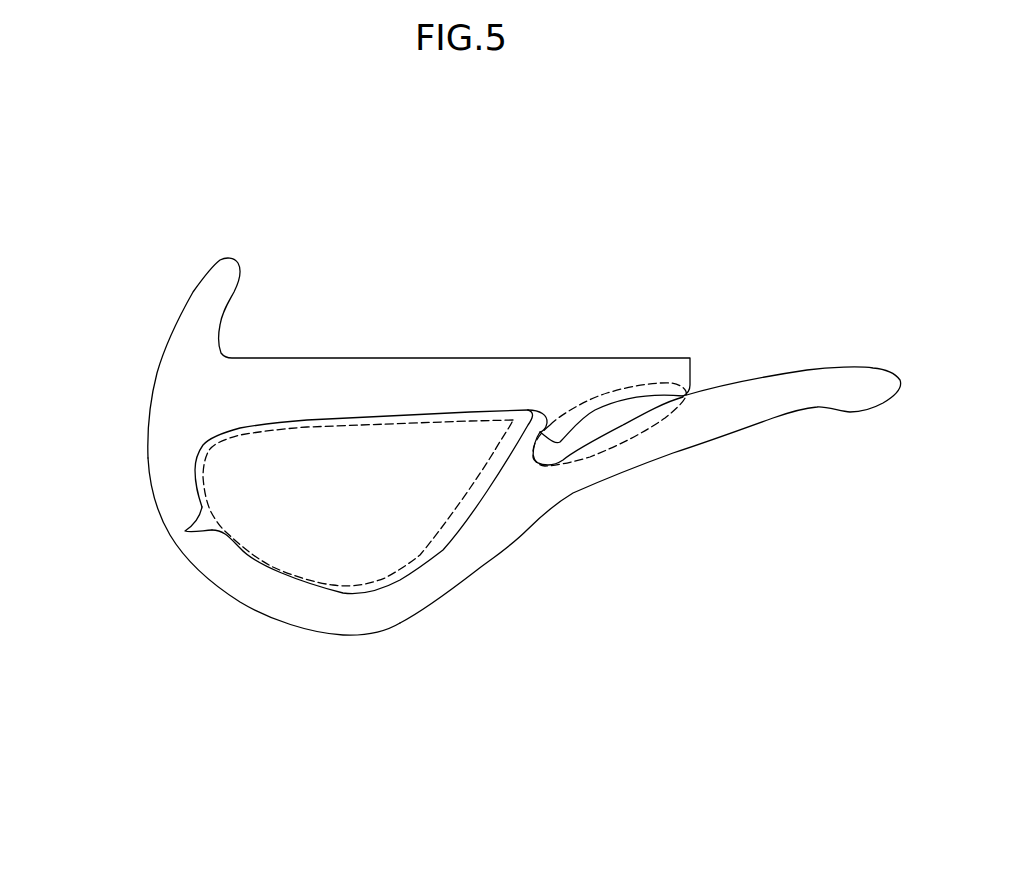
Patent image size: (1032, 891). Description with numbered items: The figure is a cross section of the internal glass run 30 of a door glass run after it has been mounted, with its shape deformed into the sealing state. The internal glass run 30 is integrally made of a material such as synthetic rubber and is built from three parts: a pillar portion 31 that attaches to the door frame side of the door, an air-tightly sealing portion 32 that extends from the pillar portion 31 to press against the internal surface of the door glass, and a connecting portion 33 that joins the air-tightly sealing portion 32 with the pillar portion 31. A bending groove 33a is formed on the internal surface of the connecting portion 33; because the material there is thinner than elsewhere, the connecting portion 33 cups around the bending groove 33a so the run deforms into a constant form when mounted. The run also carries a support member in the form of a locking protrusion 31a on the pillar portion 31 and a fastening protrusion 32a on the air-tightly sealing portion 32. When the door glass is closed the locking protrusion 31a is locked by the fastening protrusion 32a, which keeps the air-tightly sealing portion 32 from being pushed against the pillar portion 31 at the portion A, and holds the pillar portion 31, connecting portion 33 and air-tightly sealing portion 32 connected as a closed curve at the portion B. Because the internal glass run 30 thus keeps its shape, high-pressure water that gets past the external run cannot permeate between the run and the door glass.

The internal glass run 30 is at (150, 342).
The pillar portion 31 is at (398, 380).
The locking protrusion 31a is at (560, 437).
The air-tightly sealing portion 32 is at (518, 498).
The fastening protrusion 32a is at (531, 420).
The connecting portion 33 is at (213, 555).
The bending groove 33a is at (198, 523).
The portion A is at (661, 423).
The portion B is at (323, 582).